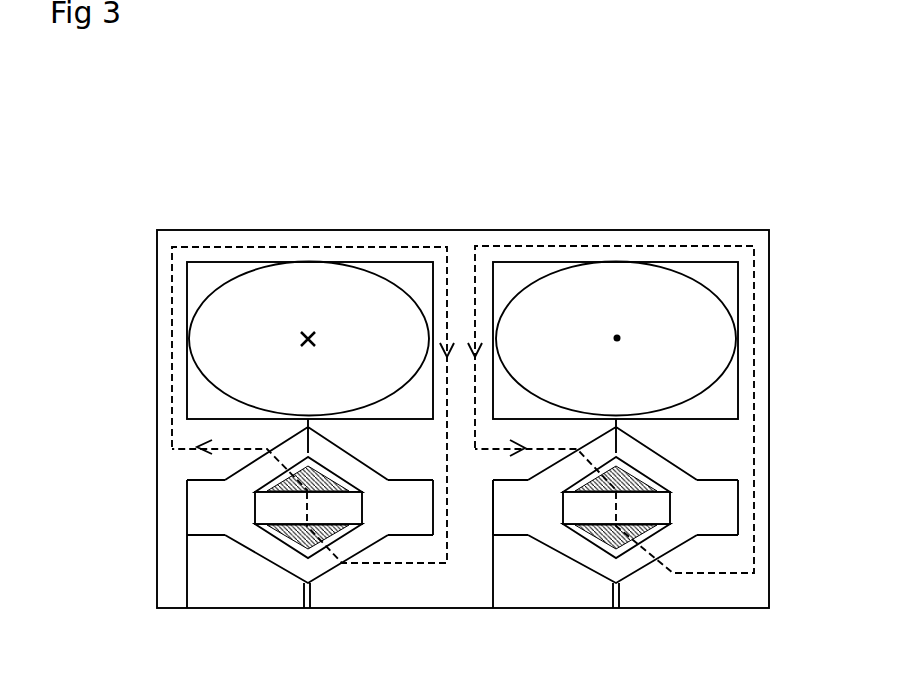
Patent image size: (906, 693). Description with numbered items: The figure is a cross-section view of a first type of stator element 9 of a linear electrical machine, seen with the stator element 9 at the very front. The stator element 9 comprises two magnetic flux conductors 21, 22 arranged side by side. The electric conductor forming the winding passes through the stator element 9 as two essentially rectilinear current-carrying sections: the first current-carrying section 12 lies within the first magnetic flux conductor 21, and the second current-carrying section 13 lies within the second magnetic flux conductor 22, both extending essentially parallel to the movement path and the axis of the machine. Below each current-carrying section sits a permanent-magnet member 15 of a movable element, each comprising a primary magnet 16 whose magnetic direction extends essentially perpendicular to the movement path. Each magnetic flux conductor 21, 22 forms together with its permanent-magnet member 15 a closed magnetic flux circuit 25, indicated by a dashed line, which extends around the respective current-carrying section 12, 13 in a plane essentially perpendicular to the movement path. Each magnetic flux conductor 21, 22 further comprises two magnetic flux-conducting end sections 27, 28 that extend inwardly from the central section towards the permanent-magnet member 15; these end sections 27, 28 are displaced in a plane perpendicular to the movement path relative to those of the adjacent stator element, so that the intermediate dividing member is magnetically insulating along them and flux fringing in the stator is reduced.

The stator element 9 is at (152, 226).
The first current-carrying section 12 is at (306, 302).
The second current-carrying section 13 is at (568, 302).
The permanent-magnet member 15 is at (320, 543).
The primary magnet 16 is at (283, 510).
The magnetic flux conductor 21 is at (193, 234).
The magnetic flux conductor 22 is at (692, 236).
The closed magnetic flux circuit 25 is at (275, 244).
The magnetic flux-conducting end section 27 is at (215, 460).
The magnetic flux-conducting end section 28 is at (402, 452).